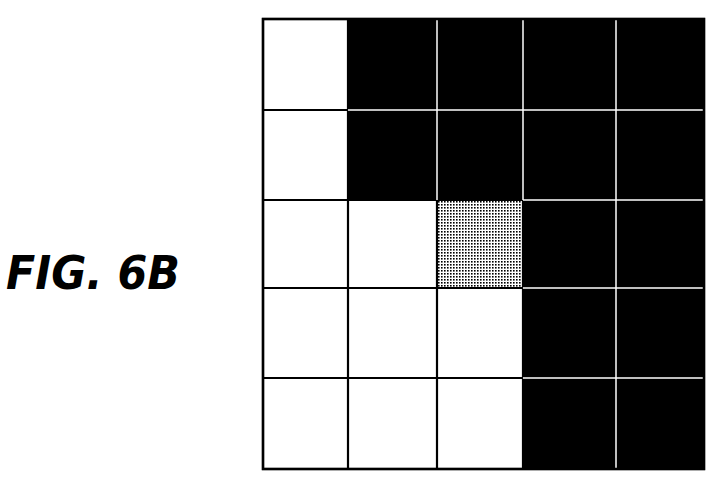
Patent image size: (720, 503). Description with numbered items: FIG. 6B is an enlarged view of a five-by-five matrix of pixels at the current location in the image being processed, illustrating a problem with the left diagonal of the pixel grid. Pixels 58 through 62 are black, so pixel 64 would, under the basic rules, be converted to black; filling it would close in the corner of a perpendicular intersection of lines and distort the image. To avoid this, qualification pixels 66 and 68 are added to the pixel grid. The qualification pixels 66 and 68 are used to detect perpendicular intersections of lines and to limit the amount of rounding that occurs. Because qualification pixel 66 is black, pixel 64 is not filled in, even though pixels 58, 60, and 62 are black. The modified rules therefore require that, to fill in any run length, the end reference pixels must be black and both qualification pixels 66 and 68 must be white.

The pixel 58 is at (392, 155).
The pixel 60 is at (569, 333).
The pixel 62 is at (660, 423).
The pixel 64 is at (480, 244).
The qualification pixel 66 is at (660, 64).
The qualification pixel 68 is at (316, 430).